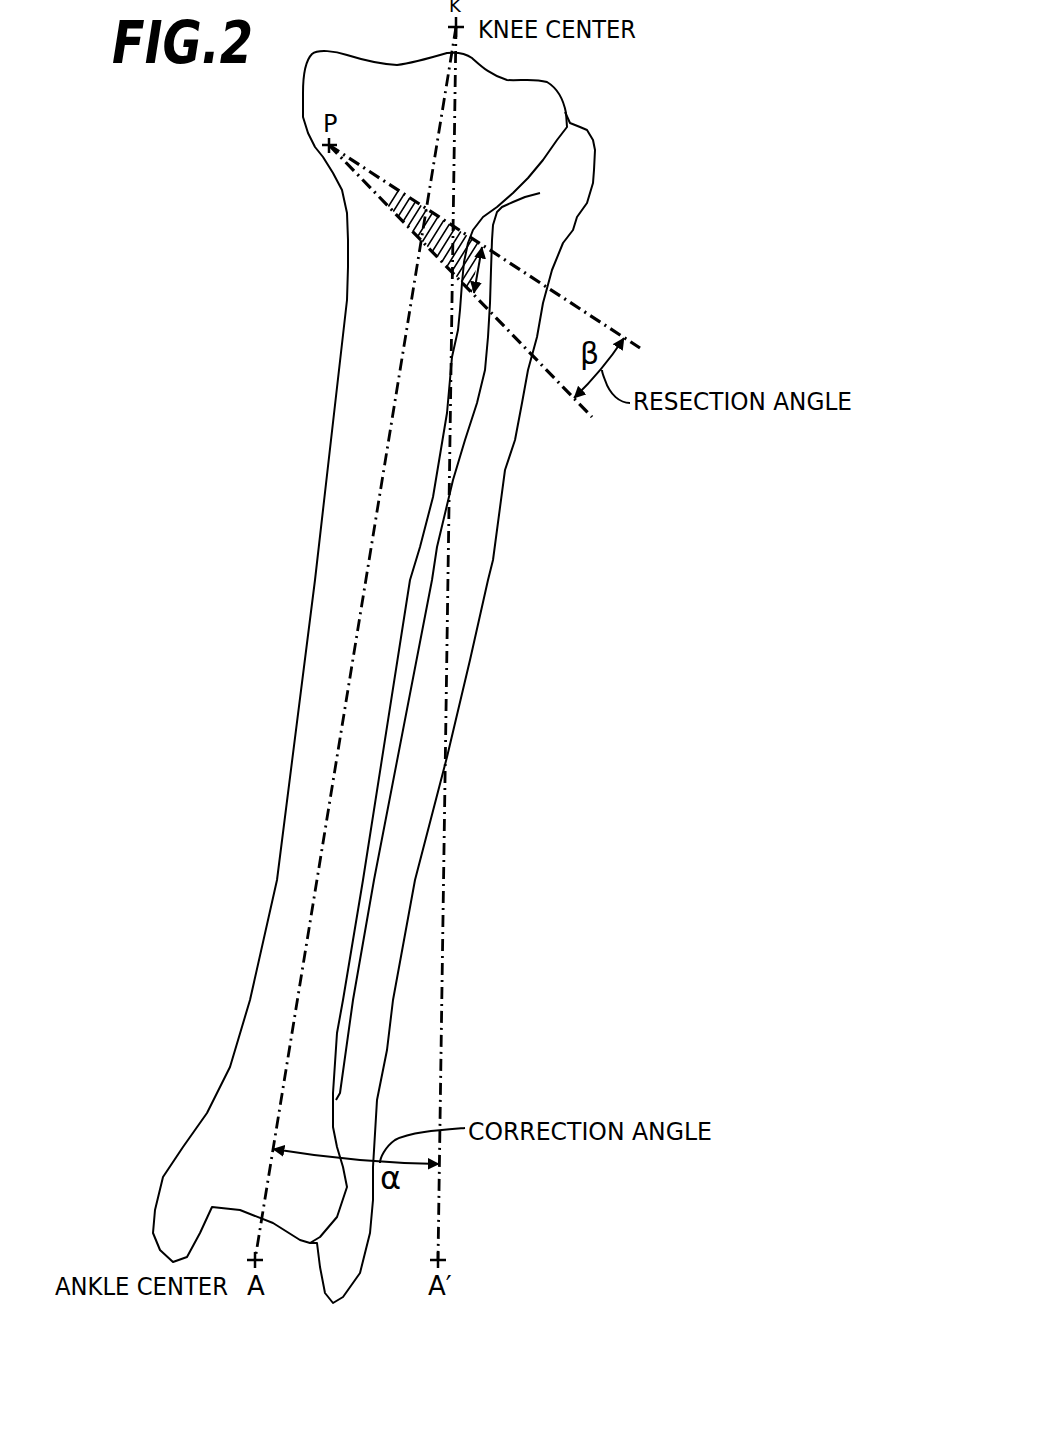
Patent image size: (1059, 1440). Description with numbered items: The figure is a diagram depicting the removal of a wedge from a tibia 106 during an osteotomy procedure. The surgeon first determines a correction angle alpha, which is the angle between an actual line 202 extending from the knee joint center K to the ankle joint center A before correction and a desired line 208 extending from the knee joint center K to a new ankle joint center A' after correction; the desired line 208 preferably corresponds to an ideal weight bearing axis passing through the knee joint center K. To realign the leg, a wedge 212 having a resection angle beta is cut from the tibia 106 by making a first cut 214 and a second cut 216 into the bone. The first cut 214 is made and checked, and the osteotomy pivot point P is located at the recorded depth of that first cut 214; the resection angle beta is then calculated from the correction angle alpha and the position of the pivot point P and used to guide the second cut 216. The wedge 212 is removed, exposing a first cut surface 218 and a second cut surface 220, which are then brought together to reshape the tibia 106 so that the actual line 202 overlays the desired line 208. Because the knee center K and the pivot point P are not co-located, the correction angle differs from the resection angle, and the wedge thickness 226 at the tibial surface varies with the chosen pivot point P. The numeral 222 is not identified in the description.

The tibia 106 is at (535, 98).
The actual line 202 is at (327, 823).
The desired line 208 is at (447, 842).
The wedge 212 is at (373, 227).
The first cut 214 is at (540, 193).
The second cut 216 is at (461, 284).
The first cut surface 218 is at (373, 227).
The second cut surface 220 is at (387, 182).
The hinge point 222 is at (322, 146).
The wedge thickness 226 is at (481, 270).